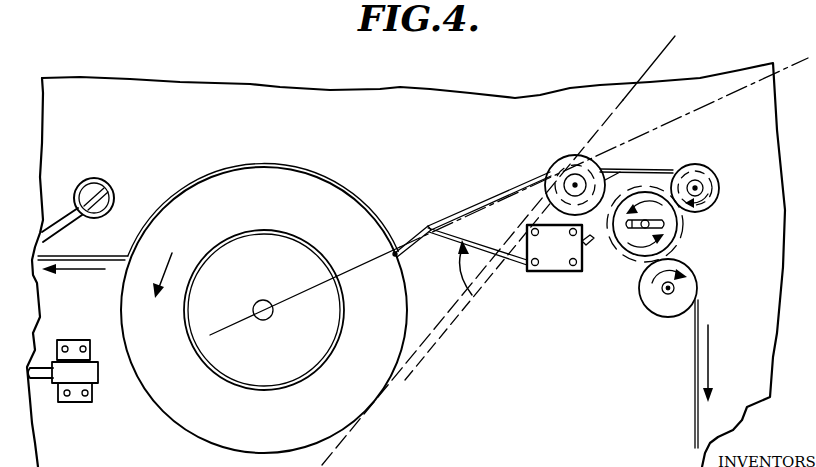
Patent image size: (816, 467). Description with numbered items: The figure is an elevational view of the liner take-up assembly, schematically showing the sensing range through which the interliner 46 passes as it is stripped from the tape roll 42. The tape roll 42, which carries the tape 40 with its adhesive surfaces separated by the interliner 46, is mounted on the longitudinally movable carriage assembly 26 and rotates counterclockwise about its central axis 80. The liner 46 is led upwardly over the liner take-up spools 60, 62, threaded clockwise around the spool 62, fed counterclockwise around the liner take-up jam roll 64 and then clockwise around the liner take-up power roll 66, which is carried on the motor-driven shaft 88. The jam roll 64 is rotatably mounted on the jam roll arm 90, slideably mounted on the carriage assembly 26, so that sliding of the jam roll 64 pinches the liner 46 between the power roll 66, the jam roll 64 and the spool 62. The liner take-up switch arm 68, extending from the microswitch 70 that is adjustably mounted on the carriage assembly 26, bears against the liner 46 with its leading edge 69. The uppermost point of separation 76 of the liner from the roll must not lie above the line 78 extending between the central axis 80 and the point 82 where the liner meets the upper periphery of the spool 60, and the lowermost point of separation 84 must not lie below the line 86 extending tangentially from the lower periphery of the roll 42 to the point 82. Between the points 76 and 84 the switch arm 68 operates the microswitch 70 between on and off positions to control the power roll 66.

The carriage assembly 26 is at (370, 155).
The tape 40 is at (108, 256).
The tape roll 42 is at (280, 217).
The interliner 46 is at (492, 198).
The liner take-up spool 60 is at (604, 180).
The liner take-up spool 62 is at (712, 178).
The liner take-up jam roll 64 is at (673, 242).
The liner take-up power roll 66 is at (652, 300).
The liner take-up switch arm 68 is at (488, 250).
The leading edge 69 is at (430, 231).
The microswitch 70 is at (560, 248).
The uppermost point of separation 76 is at (394, 260).
The line 78 is at (348, 268).
The central axis 80 is at (272, 285).
The point 82 is at (566, 170).
The lowermost point of separation 84 is at (377, 404).
The line 86 is at (660, 56).
The shaft 88 is at (674, 288).
The jam roll arm 90 is at (643, 227).